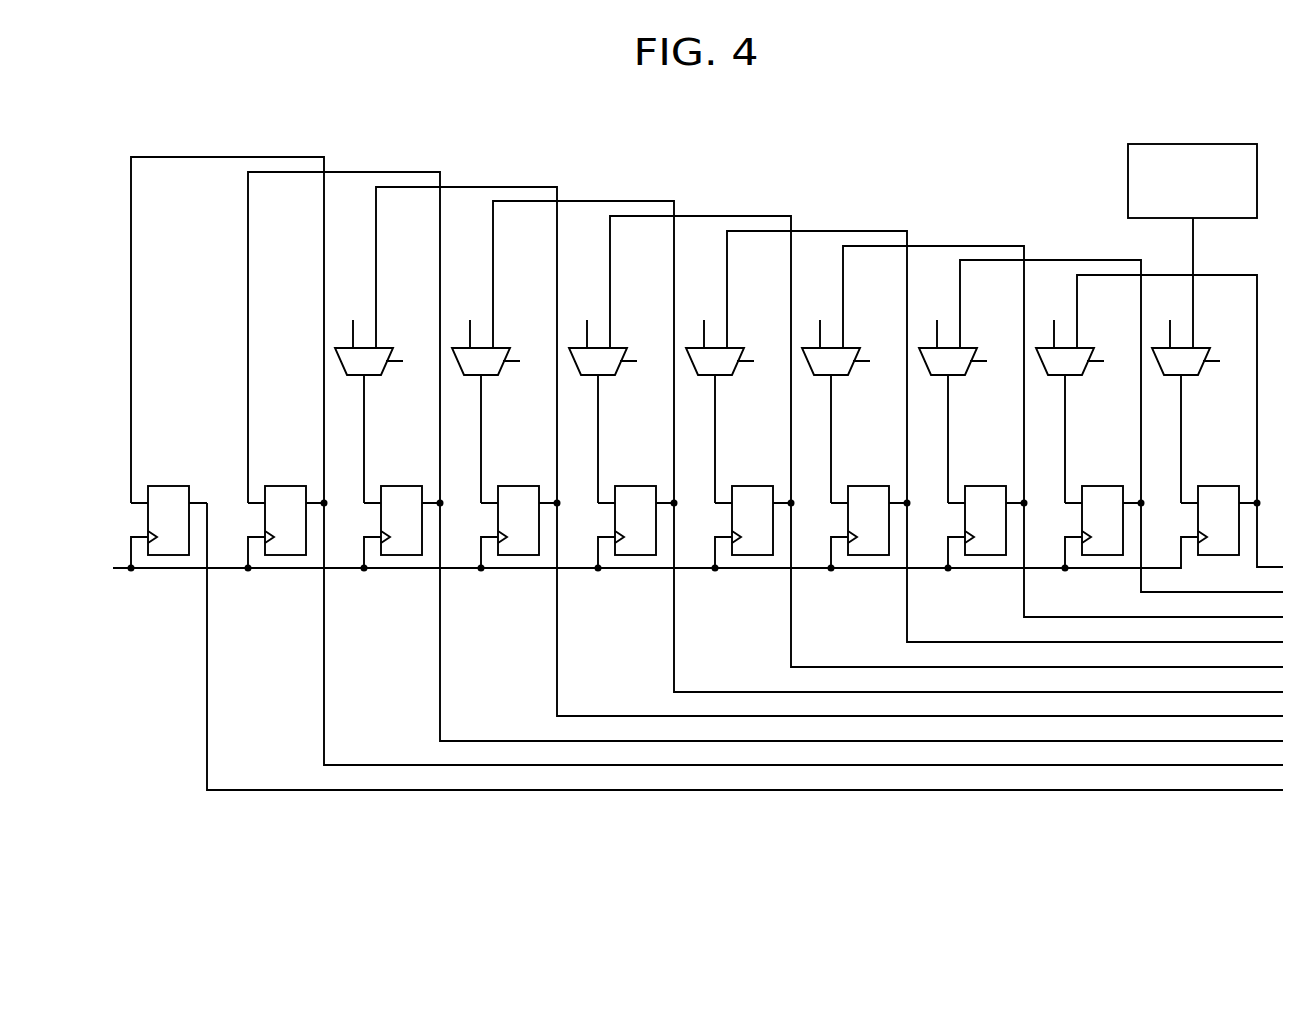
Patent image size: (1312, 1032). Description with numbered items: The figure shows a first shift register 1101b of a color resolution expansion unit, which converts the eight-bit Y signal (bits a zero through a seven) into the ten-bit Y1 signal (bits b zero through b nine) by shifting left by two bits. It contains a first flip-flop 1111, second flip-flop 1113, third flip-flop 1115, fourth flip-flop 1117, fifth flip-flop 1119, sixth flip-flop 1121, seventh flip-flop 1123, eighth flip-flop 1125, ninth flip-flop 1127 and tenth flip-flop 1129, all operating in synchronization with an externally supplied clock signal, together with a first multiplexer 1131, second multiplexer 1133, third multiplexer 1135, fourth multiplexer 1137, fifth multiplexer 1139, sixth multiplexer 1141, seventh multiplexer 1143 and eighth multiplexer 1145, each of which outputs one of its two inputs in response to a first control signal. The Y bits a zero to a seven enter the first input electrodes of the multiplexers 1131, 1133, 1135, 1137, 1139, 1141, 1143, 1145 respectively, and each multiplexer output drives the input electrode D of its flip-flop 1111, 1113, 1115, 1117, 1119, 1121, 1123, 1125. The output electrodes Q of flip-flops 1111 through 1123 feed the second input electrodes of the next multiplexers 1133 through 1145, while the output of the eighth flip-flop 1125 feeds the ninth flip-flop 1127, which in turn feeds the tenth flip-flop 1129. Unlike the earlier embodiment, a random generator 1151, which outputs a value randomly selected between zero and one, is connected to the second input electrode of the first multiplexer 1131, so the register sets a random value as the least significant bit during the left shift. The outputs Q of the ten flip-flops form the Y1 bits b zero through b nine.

The first shift register 1101b is at (707, 114).
The first flip-flop 1111 is at (1220, 486).
The second flip-flop 1113 is at (1104, 486).
The third flip-flop 1115 is at (987, 486).
The fourth flip-flop 1117 is at (870, 486).
The fifth flip-flop 1119 is at (754, 486).
The sixth flip-flop 1121 is at (637, 486).
The seventh flip-flop 1123 is at (520, 486).
The eighth flip-flop 1125 is at (403, 486).
The ninth flip-flop 1127 is at (287, 486).
The tenth flip-flop 1129 is at (170, 486).
The first multiplexer 1131 is at (1186, 377).
The second multiplexer 1133 is at (1070, 377).
The third multiplexer 1135 is at (953, 377).
The fourth multiplexer 1137 is at (836, 377).
The fifth multiplexer 1139 is at (720, 377).
The sixth multiplexer 1141 is at (603, 377).
The seventh multiplexer 1143 is at (486, 377).
The eighth multiplexer 1145 is at (369, 377).
The random generator 1151 is at (1128, 180).